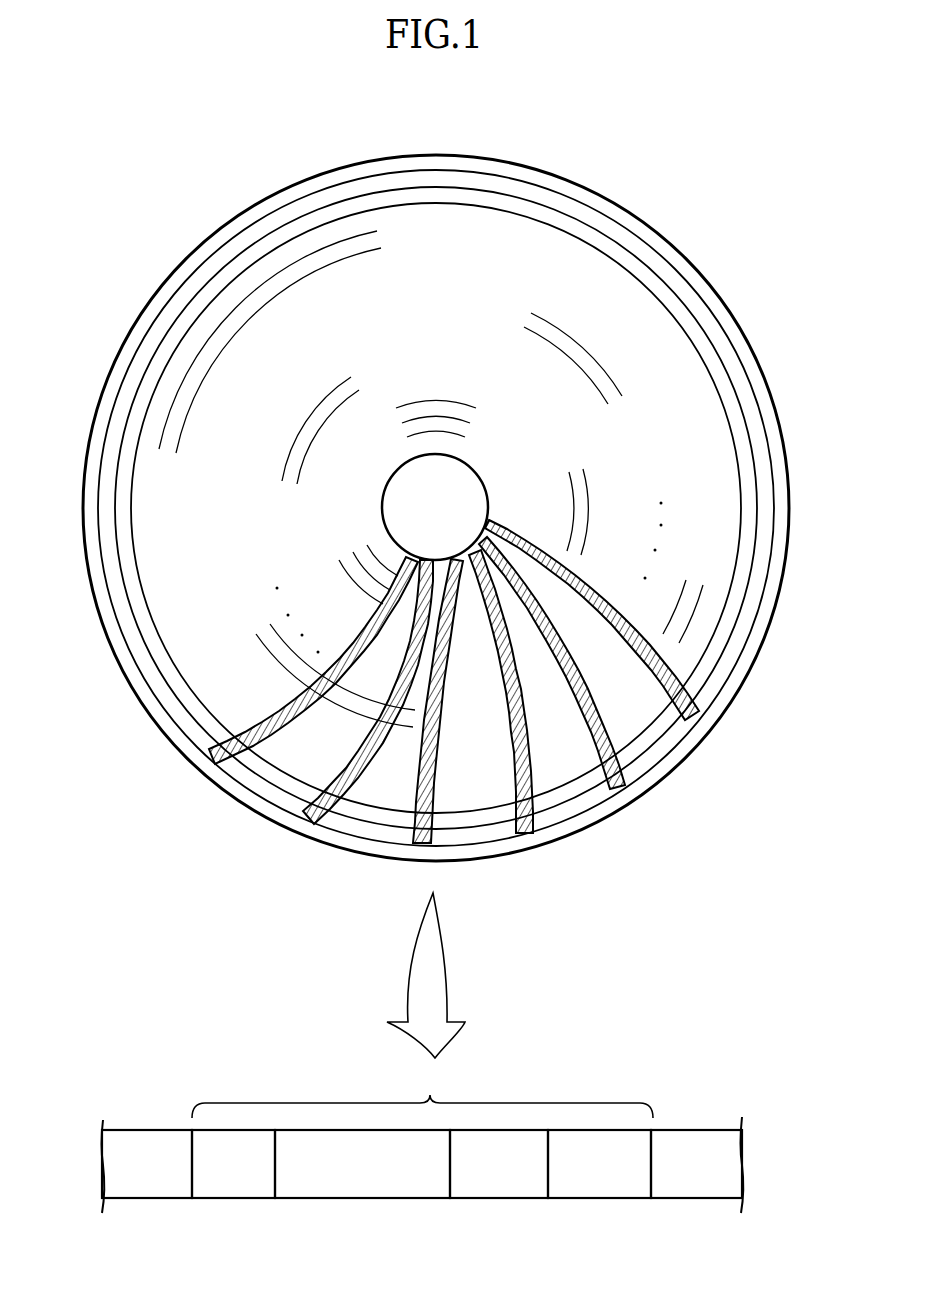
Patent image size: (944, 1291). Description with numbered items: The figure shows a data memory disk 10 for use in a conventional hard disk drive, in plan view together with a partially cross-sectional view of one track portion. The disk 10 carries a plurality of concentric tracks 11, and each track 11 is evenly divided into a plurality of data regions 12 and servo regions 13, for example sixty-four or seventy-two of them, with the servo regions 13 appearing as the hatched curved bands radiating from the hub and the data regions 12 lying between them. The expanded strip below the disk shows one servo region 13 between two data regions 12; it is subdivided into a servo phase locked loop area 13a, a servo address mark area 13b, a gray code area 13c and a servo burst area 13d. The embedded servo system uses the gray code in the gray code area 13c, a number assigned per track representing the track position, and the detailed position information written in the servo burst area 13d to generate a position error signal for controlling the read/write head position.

The data memory disk 10 is at (158, 240).
The track 11 is at (777, 512).
The data region 12 is at (673, 760).
The servo region 13 is at (490, 838).
The servo phase locked loop area 13a is at (265, 1193).
The servo address mark area 13b is at (420, 1193).
The gray code area 13c is at (528, 1193).
The servo burst area 13d is at (623, 1193).